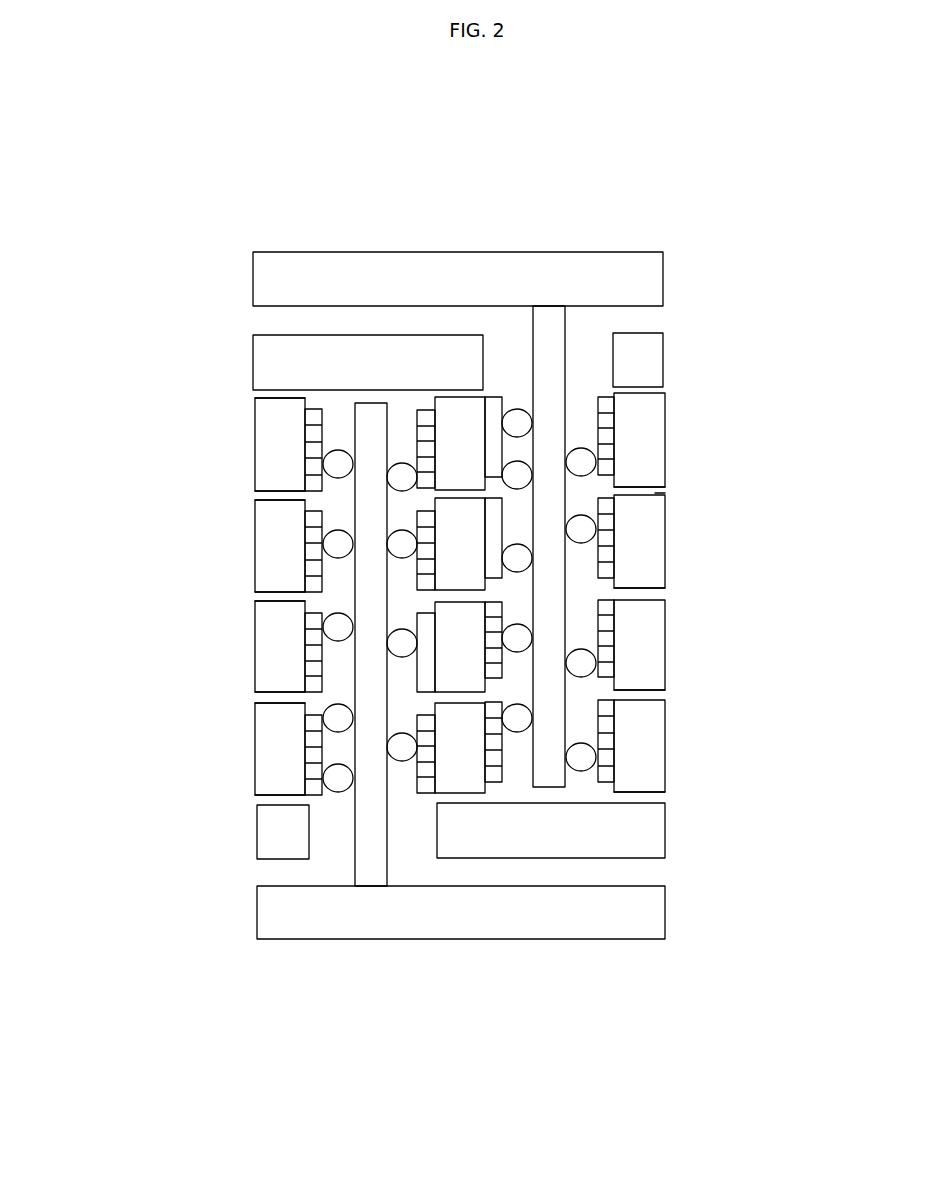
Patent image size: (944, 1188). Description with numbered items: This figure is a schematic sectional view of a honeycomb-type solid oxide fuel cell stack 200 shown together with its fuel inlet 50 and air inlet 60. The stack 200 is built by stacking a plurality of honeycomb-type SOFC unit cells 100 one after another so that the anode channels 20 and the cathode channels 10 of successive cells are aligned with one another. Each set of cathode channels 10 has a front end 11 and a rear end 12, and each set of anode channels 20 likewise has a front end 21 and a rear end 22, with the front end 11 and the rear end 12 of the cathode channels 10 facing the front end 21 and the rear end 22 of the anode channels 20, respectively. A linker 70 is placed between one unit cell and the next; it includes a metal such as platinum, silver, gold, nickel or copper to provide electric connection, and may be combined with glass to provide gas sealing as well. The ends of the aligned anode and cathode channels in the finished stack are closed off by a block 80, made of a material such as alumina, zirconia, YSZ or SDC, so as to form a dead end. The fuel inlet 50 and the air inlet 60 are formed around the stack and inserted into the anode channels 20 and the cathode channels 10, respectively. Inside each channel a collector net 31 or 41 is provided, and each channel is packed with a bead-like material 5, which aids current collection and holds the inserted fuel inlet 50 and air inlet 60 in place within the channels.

The bead-like material 5 is at (340, 793).
The cathode channels 10 is at (517, 397).
The front end 11 is at (665, 393).
The rear end 12 is at (665, 487).
The anode channels 20 is at (338, 417).
The front end 21 is at (255, 398).
The rear end 22 is at (255, 490).
The collector net 31 is at (313, 412).
The collector net 41 is at (604, 410).
The fuel inlet 50 is at (493, 928).
The air inlet 60 is at (648, 278).
The linker 70 is at (660, 493).
The block 80 is at (655, 360).
The honeycomb-type SOFC unit cells 100 is at (270, 430).
The stack 200 is at (104, 400).